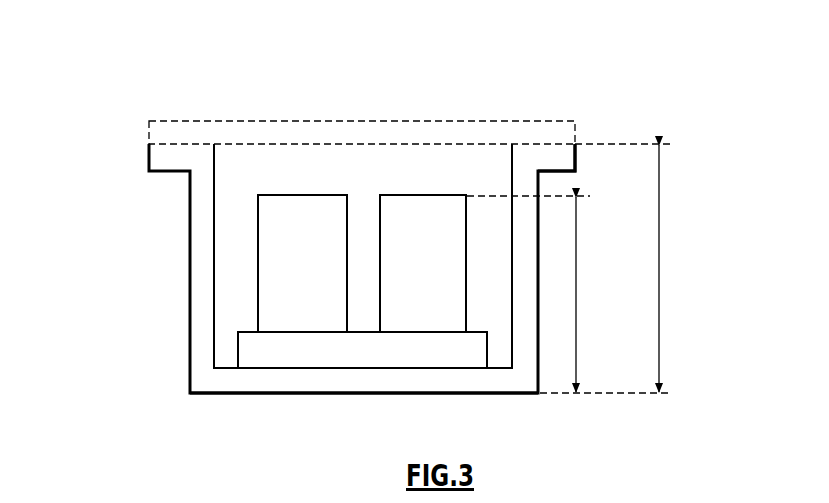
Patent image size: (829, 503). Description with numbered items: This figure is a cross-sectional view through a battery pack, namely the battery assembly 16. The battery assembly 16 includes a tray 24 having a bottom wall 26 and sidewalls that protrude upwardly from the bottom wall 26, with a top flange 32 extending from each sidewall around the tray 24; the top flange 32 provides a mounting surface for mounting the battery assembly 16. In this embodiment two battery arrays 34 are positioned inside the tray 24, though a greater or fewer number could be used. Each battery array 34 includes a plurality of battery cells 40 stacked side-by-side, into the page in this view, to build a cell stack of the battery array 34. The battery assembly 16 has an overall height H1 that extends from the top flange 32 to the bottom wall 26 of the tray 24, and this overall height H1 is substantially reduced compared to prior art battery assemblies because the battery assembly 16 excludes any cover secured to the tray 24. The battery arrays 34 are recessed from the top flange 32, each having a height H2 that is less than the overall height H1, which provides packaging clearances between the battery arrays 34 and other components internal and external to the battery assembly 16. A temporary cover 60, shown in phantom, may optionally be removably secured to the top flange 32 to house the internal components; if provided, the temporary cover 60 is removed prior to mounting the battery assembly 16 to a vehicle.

The battery assembly 16 is at (368, 95).
The temporary cover 60 is at (410, 130).
The tray 24 is at (168, 262).
The top flange 32 is at (565, 158).
The bottom wall 26 is at (494, 394).
The battery array 34 is at (295, 193).
The battery cell 40 is at (362, 263).
The overall height H1 is at (659, 265).
The height H2 is at (577, 305).